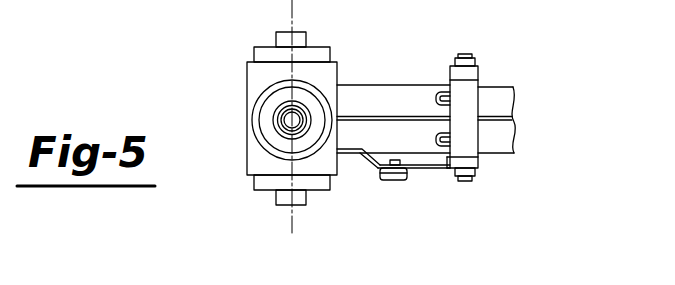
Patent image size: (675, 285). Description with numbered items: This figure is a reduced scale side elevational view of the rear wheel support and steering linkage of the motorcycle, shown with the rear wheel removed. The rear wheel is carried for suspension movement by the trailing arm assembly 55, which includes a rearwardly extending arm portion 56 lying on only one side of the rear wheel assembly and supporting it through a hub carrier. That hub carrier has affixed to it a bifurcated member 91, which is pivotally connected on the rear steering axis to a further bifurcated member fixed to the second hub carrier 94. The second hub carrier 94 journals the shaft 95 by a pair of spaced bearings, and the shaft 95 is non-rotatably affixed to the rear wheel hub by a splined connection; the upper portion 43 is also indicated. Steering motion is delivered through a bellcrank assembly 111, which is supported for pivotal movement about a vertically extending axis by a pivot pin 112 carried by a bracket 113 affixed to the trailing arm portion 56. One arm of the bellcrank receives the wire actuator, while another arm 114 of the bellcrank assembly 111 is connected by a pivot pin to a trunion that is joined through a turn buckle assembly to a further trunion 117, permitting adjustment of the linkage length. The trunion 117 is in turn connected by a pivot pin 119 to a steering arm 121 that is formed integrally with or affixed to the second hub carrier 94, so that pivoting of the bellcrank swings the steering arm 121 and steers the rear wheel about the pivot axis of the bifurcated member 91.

The upper portion 43 is at (282, 32).
The bifurcated member 91 is at (257, 52).
The second hub carrier 94 is at (256, 98).
The shaft 95 is at (283, 121).
The trailing arm assembly 55 is at (365, 82).
The rearwardly extending arm portion 56 is at (518, 147).
The bellcrank assembly 111 is at (477, 76).
The pivot pin 112 is at (465, 54).
The bracket 113 is at (435, 98).
The arm 114 is at (428, 168).
The trunion 117 is at (397, 182).
The pivot pin 119 is at (395, 159).
The steering arm 121 is at (348, 155).